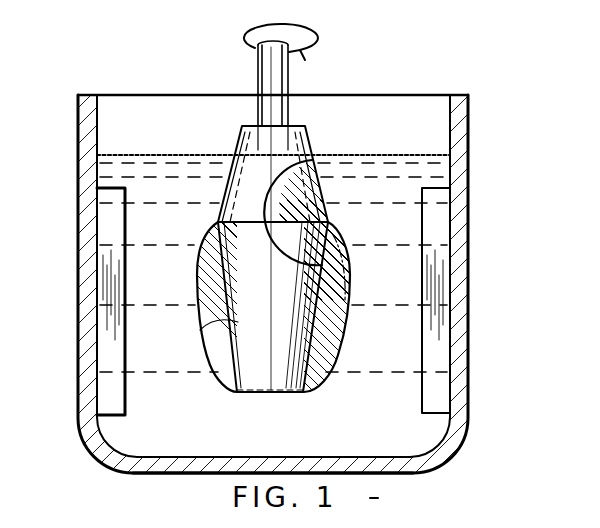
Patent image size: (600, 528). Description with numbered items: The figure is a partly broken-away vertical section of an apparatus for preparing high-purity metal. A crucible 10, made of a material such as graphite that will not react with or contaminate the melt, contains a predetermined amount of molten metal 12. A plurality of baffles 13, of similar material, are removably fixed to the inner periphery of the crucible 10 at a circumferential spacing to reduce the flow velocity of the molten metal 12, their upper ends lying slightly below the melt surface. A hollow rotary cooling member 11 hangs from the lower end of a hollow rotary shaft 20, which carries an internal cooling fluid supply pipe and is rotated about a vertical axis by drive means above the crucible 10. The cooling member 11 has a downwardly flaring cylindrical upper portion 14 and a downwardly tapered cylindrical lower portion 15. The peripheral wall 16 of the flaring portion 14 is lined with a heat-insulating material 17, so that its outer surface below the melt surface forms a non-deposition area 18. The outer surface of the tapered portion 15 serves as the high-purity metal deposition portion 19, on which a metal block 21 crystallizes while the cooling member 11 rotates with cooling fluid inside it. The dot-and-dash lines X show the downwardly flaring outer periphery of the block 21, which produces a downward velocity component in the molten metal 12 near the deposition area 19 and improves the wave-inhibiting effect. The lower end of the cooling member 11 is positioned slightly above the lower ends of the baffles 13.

The crucible 10 is at (462, 325).
The hollow rotary cooling member 11 is at (292, 400).
The molten metal 12 is at (404, 430).
The baffles 13 is at (103, 382).
The downwardly flaring cylindrical upper portion 14 is at (260, 152).
The downwardly tapered cylindrical lower portion 15 is at (257, 368).
The peripheral wall 16 is at (330, 200).
The heat-insulating material 17 is at (318, 164).
The non-deposition area 18 is at (227, 188).
The high-purity metal deposition portion 19 is at (217, 322).
The hollow rotary shaft 20 is at (270, 48).
The metal block 21 is at (328, 345).
The dot-and-dash lines X is at (334, 264).